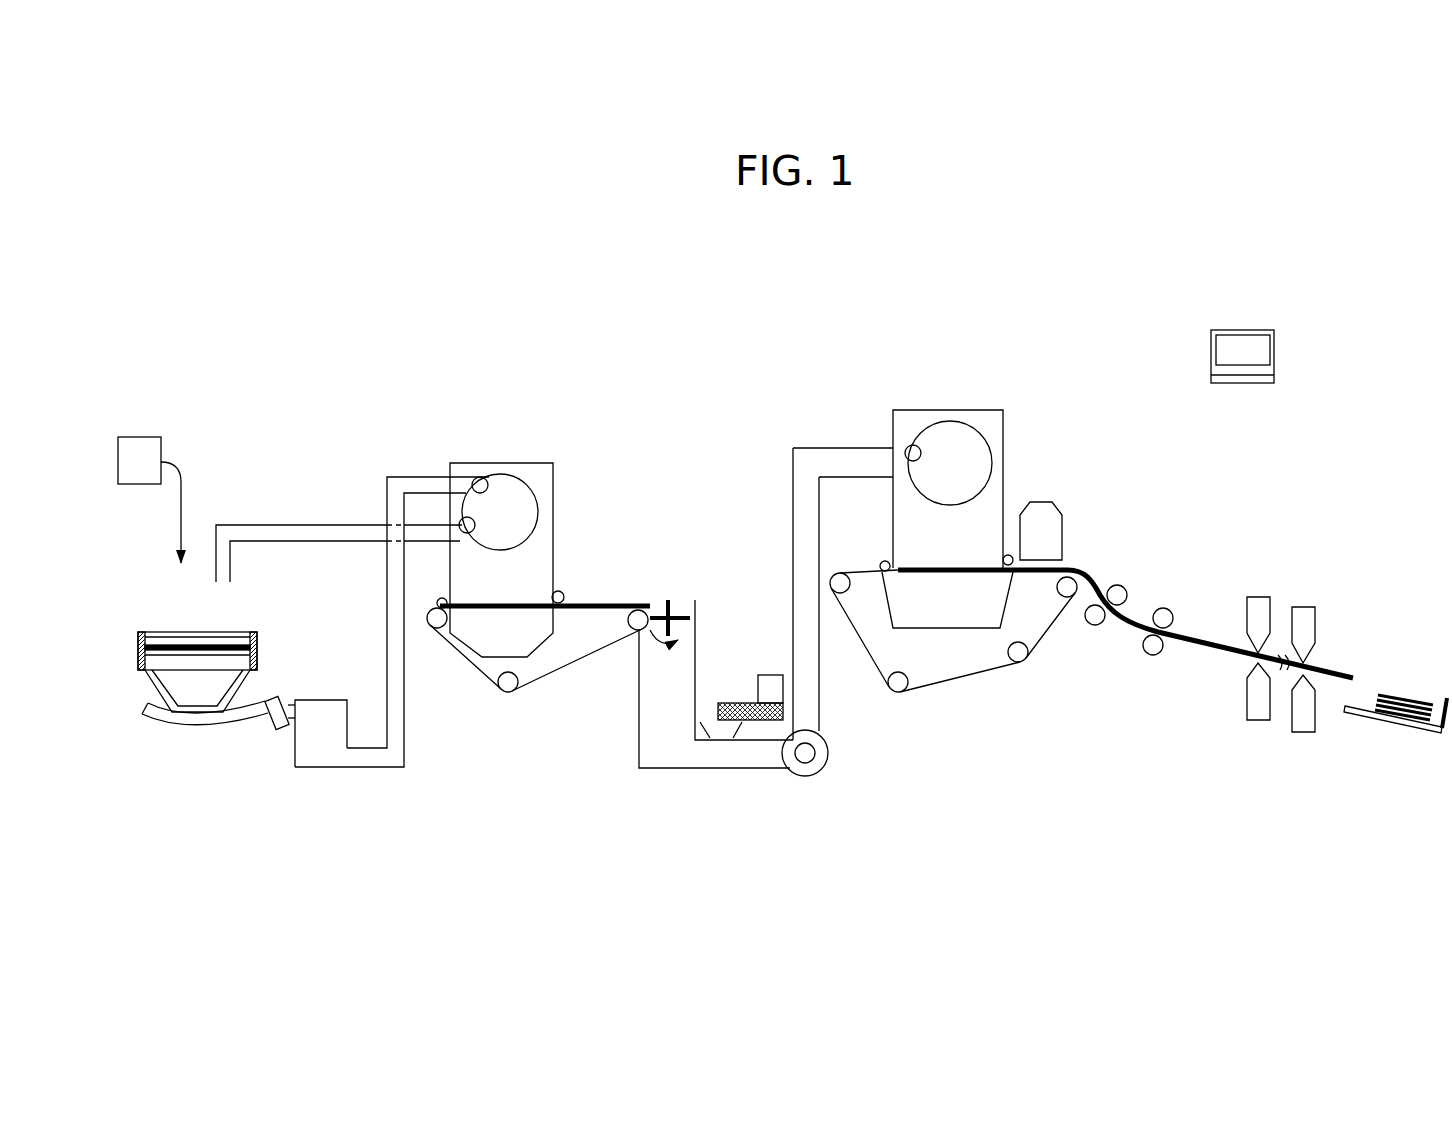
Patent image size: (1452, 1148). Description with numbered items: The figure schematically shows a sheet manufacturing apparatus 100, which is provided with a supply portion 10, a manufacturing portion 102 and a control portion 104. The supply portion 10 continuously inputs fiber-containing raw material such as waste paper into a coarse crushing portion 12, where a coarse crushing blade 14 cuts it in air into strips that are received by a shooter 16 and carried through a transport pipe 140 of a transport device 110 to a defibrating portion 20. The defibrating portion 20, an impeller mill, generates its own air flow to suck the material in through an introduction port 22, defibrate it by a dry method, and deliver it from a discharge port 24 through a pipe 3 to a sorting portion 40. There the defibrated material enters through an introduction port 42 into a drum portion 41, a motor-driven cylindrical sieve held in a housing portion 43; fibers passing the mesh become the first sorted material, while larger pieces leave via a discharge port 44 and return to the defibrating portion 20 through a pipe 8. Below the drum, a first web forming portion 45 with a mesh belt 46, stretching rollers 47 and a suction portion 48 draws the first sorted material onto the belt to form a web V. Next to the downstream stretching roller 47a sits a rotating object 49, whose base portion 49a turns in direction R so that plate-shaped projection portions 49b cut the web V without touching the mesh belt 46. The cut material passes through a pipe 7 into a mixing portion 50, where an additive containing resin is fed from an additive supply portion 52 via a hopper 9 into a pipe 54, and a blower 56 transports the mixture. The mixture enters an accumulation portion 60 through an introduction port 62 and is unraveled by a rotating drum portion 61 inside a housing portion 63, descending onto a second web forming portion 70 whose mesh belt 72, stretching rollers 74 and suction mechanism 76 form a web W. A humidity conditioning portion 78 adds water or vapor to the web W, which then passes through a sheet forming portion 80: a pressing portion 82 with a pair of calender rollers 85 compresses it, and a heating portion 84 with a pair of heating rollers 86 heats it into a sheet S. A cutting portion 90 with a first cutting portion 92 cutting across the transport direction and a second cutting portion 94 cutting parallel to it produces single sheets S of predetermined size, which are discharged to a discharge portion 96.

The sheet manufacturing apparatus 100 is at (1199, 243).
The manufacturing portion 102 is at (1103, 314).
The control portion 104 is at (1260, 340).
The supply portion 10 is at (177, 420).
The coarse crushing portion 12 is at (243, 613).
The coarse crushing blade 14 is at (155, 640).
The shooter 16 is at (177, 693).
The transport pipe 140 is at (210, 740).
The transport device 110 is at (256, 697).
The defibrating portion 20 is at (326, 686).
The introduction port 22 is at (308, 703).
The discharge port 24 is at (340, 752).
The pipe 3 is at (394, 616).
The pipe 8 is at (330, 527).
The sorting portion 40 is at (566, 440).
The drum portion 41 is at (538, 512).
The introduction port 42 is at (481, 478).
The housing portion 43 is at (553, 483).
The discharge port 44 is at (460, 523).
The first web forming portion 45 is at (458, 682).
The mesh belt 46 is at (555, 675).
The stretching roller 47 is at (436, 630).
The stretching roller 47a is at (636, 633).
The suction portion 48 is at (492, 643).
The rotating object 49 is at (638, 553).
The base portion 49a is at (672, 612).
The projection portion 49b is at (666, 600).
The web V is at (585, 602).
The direction R is at (697, 645).
The pipe 7 is at (680, 690).
The hopper 9 is at (698, 731).
The additive supply portion 52 is at (770, 675).
The pipe 54 is at (805, 590).
The blower 56 is at (818, 773).
The mixing portion 50 is at (845, 784).
The accumulation portion 60 is at (1017, 389).
The drum portion 61 is at (992, 457).
The introduction port 62 is at (913, 445).
The housing portion 63 is at (1003, 430).
The humidity conditioning portion 78 is at (1037, 520).
The second web forming portion 70 is at (1021, 726).
The mesh belt 72 is at (880, 565).
The stretching roller 74 is at (840, 595).
The suction mechanism 76 is at (957, 608).
The web W is at (1083, 568).
The sheet forming portion 80 is at (1157, 541).
The pressing portion 82 is at (1133, 570).
The heating portion 84 is at (1180, 601).
The calender rollers 85 is at (1115, 585).
The heating rollers 86 is at (1160, 607).
The cutting portion 90 is at (1278, 541).
The first cutting portion 92 is at (1262, 576).
The second cutting portion 94 is at (1303, 588).
The sheet S is at (1220, 643).
The discharge portion 96 is at (1425, 731).